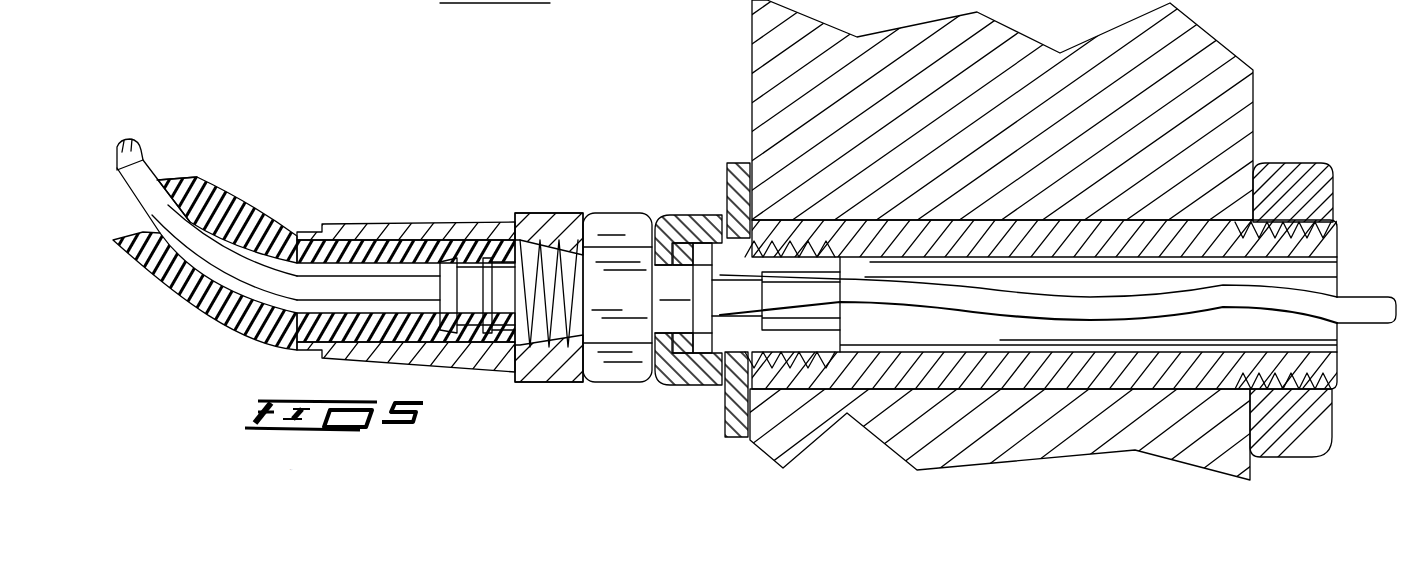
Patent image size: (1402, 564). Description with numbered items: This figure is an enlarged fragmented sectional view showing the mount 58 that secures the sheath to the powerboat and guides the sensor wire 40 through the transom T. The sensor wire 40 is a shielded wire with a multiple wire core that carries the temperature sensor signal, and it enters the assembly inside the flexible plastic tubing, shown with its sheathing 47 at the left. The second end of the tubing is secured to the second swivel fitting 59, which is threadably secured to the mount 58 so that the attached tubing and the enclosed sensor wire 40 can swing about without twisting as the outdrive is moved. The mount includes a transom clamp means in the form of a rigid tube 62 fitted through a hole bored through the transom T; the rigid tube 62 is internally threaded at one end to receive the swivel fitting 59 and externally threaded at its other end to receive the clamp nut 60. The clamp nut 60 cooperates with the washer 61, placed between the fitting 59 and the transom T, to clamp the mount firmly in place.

The sensor wire 40 is at (133, 173).
The strain relief sleeve / ferrule assembly 47 is at (252, 196).
The mount 58 is at (703, 186).
The second swivel fitting 59 is at (556, 393).
The clamp nut 60 is at (1297, 200).
The washer 61 is at (728, 160).
The rigid tube 62 is at (905, 365).
The transom T is at (806, 105).